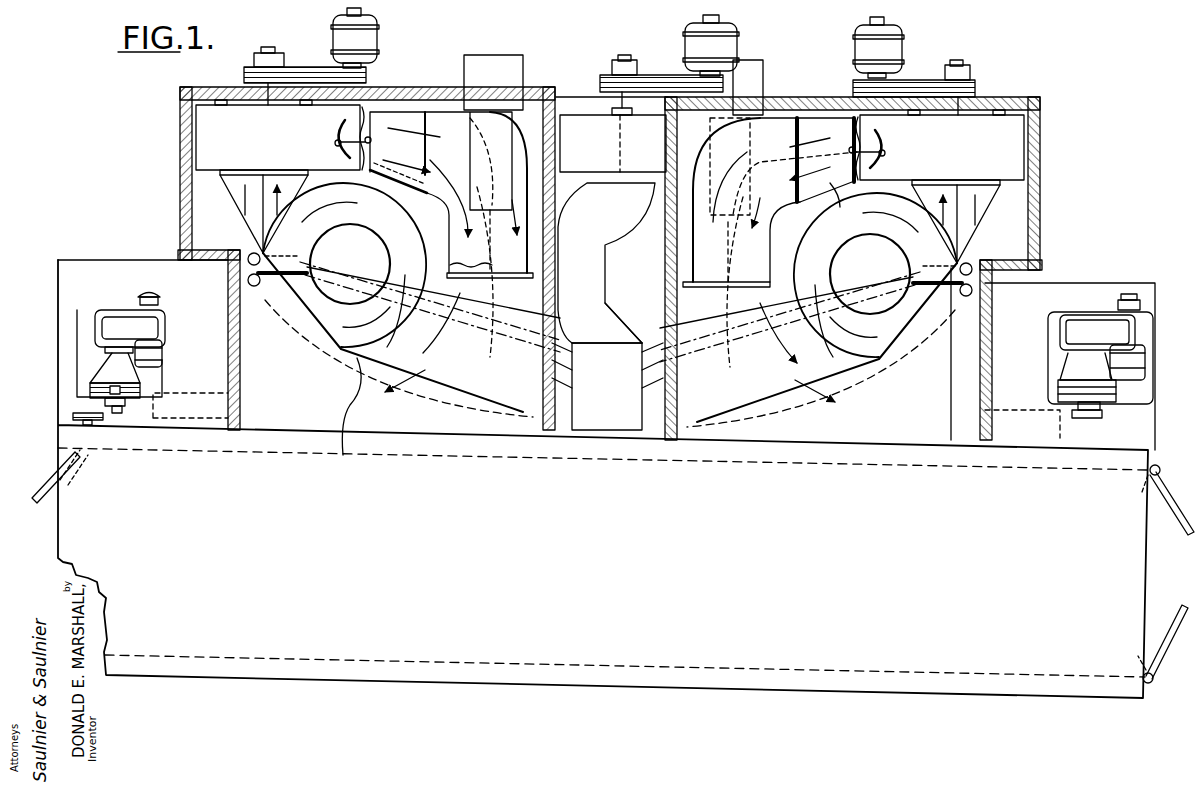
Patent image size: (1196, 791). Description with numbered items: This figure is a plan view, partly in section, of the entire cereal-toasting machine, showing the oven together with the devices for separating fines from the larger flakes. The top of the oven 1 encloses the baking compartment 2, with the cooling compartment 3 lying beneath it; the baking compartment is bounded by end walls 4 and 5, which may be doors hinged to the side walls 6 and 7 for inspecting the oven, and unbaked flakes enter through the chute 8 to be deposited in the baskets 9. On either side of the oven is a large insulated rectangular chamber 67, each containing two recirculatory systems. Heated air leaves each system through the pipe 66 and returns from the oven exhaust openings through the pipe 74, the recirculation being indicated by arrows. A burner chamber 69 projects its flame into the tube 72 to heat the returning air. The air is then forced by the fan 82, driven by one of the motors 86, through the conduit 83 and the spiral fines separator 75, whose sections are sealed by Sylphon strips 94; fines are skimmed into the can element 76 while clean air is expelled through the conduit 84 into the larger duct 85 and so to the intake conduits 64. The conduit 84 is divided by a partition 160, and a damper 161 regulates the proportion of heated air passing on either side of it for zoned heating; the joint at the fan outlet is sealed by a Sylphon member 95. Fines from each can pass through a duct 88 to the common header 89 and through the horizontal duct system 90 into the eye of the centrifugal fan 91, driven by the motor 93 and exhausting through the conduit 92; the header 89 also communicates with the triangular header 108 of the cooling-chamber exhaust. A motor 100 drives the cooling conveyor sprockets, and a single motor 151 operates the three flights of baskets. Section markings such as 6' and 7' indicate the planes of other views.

The top of the oven 1 is at (668, 538).
The baking compartment 2 is at (353, 118).
The cooling compartment 3 is at (727, 65).
The end wall 4 is at (50, 482).
The end wall 5 is at (190, 348).
The side wall 6 is at (1109, 495).
The section line 6' is at (530, 694).
The side wall 7 is at (610, 255).
The section line 7' is at (695, 478).
The chute 8 is at (498, 300).
The baskets 9 is at (290, 258).
The intake conduits 64 is at (522, 313).
The pipe 66 is at (406, 398).
The rectangular chamber 67 is at (180, 164).
The burner chamber 69 is at (466, 72).
The burner tube 72 is at (479, 123).
The pipe 74 is at (990, 358).
The fines separator 75 is at (388, 251).
The can element 76 is at (246, 277).
The fan 82 is at (269, 136).
The conduit 83 is at (241, 201).
The conduit 84 is at (397, 170).
The duct 85 is at (452, 223).
The motors 86 is at (333, 32).
The duct 88 is at (642, 377).
The header 89 is at (611, 352).
The horizontal duct system 90 is at (593, 288).
The centrifugal fan 91 is at (658, 151).
The conduit 92 is at (582, 112).
The motor 93 is at (690, 46).
The Sylphon strips 94 is at (302, 269).
The Sylphon member 95 is at (450, 272).
The motor 100 is at (156, 357).
The header 108 is at (200, 393).
The motor 151 is at (1116, 383).
The partition 160 is at (494, 231).
The damper 161 is at (338, 131).